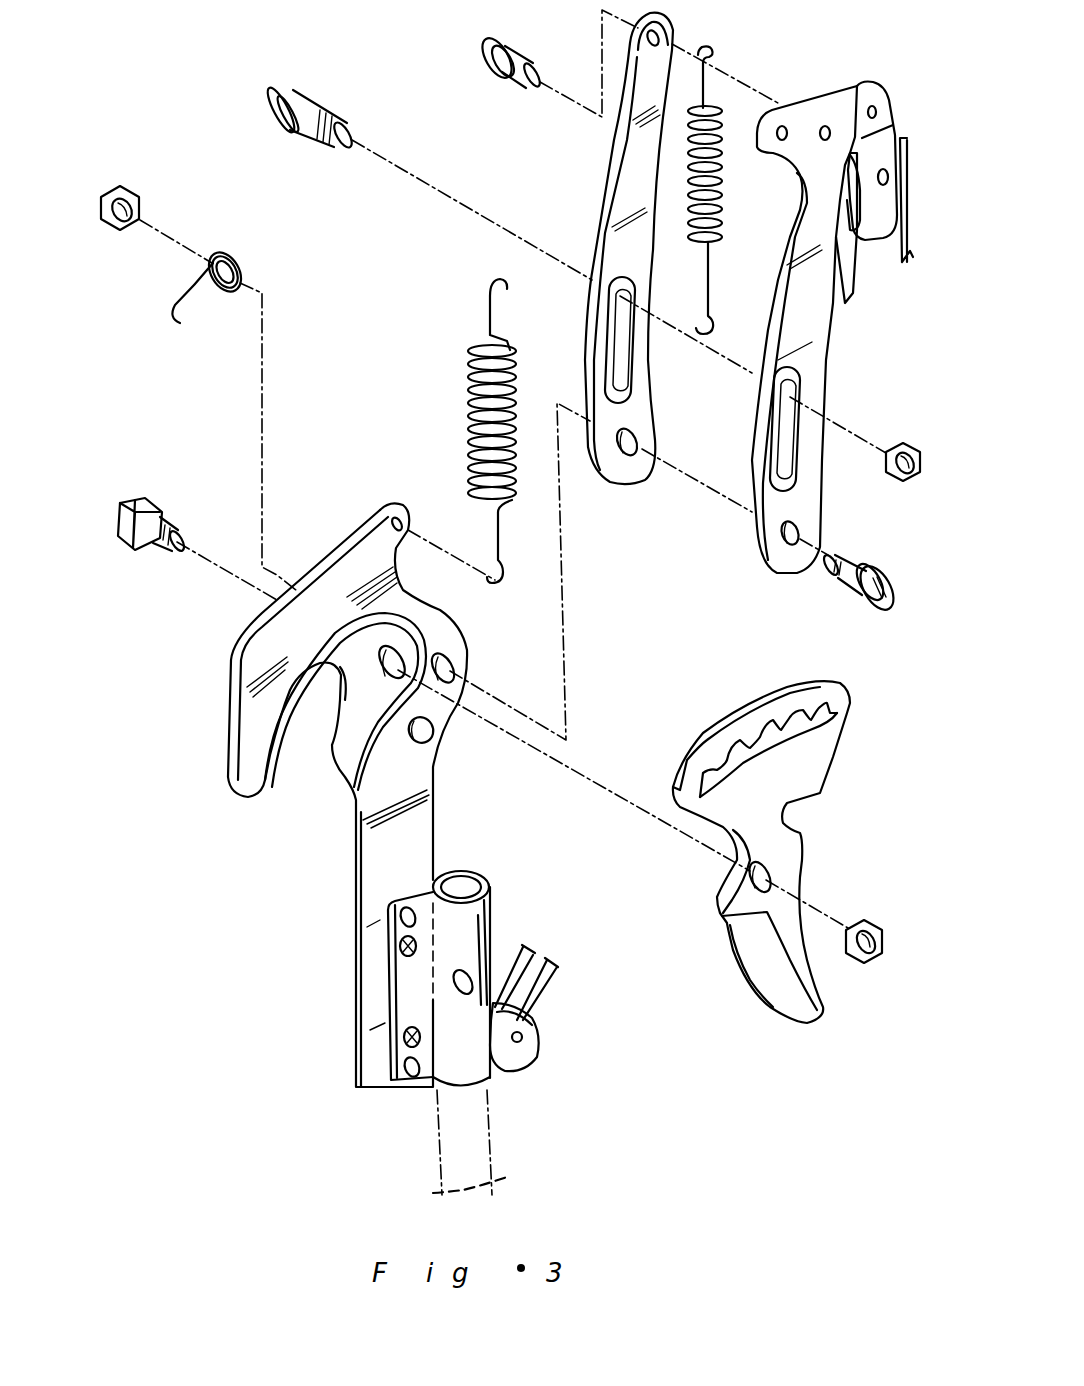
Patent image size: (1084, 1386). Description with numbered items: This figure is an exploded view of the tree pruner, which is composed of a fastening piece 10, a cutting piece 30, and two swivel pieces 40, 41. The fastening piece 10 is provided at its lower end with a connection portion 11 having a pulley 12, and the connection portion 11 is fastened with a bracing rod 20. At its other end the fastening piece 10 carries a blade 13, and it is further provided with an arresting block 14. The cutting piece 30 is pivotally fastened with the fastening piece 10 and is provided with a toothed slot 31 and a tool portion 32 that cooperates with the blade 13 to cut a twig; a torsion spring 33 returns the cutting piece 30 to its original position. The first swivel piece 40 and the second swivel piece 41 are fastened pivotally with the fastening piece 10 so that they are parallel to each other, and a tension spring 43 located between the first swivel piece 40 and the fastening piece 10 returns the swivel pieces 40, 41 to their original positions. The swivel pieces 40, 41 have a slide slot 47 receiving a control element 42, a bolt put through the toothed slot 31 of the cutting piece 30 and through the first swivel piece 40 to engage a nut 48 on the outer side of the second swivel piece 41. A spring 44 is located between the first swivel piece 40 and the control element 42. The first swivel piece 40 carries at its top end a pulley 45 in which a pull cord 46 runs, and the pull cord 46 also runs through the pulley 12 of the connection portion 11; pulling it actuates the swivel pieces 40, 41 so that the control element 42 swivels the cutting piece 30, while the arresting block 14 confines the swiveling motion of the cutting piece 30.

The fastening piece 10 is at (387, 795).
The connection portion 11 is at (477, 911).
The pulley 12 is at (543, 1022).
The blade 13 is at (290, 700).
The arresting block 14 is at (430, 733).
The bracing rod 20 is at (494, 1152).
The cutting piece 30 is at (786, 879).
The toothed slot 31 is at (822, 723).
The tool portion 32 is at (770, 1000).
The torsion spring 33 is at (233, 258).
The first swivel piece 40 is at (854, 313).
The second swivel piece 41 is at (698, 256).
The control element 42 is at (302, 110).
The tension spring 43 is at (470, 417).
The spring 44 is at (723, 190).
The pulley 45 is at (907, 148).
The pull cord 46 is at (910, 243).
The slide slot 47 is at (628, 384).
The nut 48 is at (905, 478).